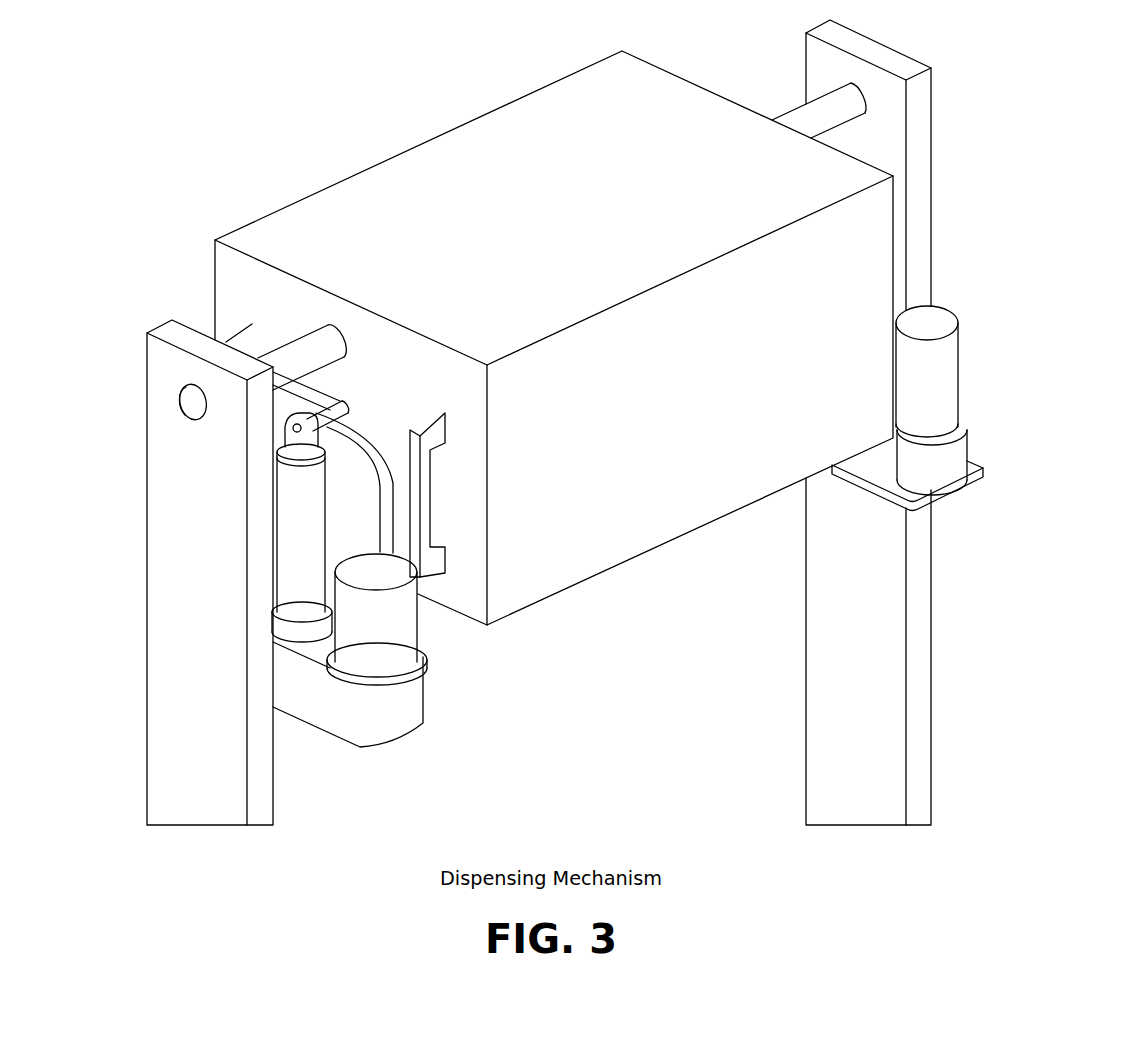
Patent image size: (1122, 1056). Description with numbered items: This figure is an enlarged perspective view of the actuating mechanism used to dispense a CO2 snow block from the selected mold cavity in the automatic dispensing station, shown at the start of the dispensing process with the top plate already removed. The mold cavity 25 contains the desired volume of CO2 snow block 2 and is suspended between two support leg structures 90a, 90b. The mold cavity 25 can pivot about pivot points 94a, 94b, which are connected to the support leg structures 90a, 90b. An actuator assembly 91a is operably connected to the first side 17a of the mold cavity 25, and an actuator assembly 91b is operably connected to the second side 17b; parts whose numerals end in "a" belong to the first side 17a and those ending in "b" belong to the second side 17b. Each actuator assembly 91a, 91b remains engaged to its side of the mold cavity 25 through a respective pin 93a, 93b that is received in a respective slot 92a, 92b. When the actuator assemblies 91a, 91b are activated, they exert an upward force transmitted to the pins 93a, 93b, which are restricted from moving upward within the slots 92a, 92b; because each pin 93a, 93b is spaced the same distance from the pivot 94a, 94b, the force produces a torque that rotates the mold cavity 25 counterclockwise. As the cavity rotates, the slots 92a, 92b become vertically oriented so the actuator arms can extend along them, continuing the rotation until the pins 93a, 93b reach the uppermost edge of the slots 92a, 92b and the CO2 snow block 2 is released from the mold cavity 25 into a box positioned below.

The CO2 snow block 2 is at (554, 353).
The first side of mold cavity 17a is at (472, 622).
The second side of mold cavity 17b is at (703, 88).
The mold cavity 25 is at (676, 538).
The support leg structure 90a is at (200, 826).
The support leg structure 90b is at (862, 826).
The actuator assembly 91a is at (450, 676).
The actuator assembly 91b is at (958, 512).
The slot 92a is at (462, 505).
The slot 92b is at (359, 474).
The pin 93a is at (400, 376).
The pin 93b is at (317, 424).
The pivot point 94a is at (300, 326).
The pivot point 94b is at (805, 87).